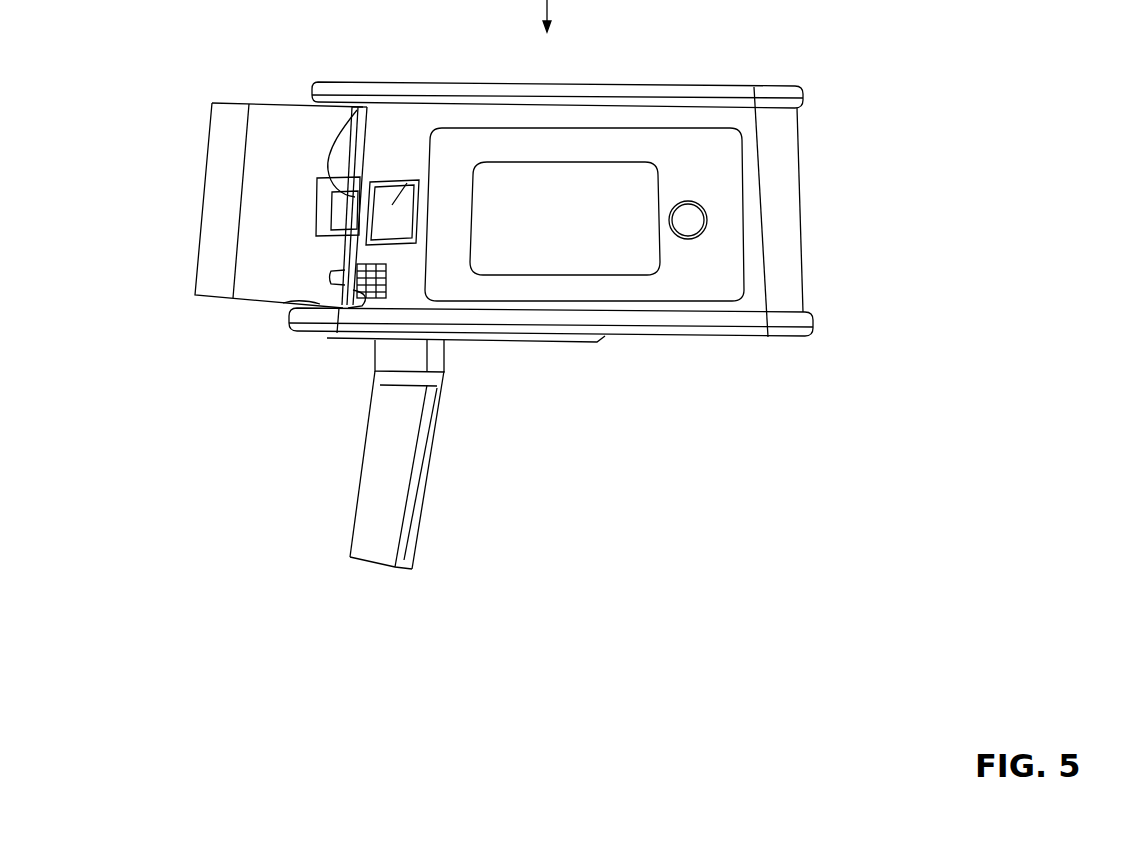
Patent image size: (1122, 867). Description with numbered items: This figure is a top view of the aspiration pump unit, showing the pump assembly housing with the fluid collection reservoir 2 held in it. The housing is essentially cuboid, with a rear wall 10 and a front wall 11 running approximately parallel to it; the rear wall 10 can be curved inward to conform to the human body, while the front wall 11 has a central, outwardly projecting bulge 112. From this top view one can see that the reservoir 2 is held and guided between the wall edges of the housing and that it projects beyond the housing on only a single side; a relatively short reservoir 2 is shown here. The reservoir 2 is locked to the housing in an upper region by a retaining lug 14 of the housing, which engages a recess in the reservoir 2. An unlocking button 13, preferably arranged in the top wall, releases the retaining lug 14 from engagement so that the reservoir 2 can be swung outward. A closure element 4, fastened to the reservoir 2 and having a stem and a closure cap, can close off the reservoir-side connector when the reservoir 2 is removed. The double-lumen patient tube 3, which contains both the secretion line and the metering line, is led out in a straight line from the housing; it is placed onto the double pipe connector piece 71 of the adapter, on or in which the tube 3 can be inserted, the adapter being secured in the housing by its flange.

The fluid collection reservoir 2 is at (270, 66).
The double-lumen patient tube 3 is at (324, 520).
The closure element 4 is at (282, 303).
The rear wall 10 is at (720, 97).
The front wall 11 is at (747, 320).
The unlocking button 13 is at (410, 182).
The retaining lug 14 is at (358, 107).
The double pipe connector piece 71 is at (388, 349).
The bulge 112 is at (605, 337).